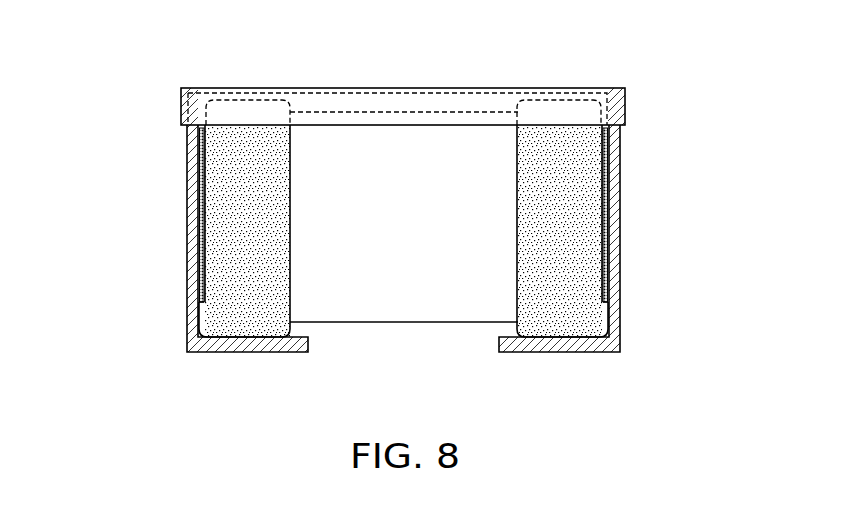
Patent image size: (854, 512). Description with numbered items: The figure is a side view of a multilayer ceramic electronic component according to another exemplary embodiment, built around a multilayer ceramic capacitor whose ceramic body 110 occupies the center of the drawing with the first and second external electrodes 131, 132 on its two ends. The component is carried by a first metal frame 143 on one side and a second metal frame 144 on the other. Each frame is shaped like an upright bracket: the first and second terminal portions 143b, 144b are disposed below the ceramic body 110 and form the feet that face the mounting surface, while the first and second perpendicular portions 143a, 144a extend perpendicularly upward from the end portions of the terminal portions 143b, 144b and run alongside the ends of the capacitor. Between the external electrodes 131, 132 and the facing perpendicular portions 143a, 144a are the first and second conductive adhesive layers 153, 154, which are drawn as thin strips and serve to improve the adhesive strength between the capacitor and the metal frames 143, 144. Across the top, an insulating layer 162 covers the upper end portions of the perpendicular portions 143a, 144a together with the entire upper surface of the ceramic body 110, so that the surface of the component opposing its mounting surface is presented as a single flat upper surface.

The ceramic body 110 is at (420, 310).
The first external electrode 131 is at (262, 333).
The second external electrode 132 is at (547, 333).
The first metal frame 143 is at (161, 235).
The first perpendicular portion 143a is at (203, 223).
The first terminal portion 143b is at (237, 345).
The second metal frame 144 is at (644, 235).
The second perpendicular portion 144a is at (605, 223).
The second terminal portion 144b is at (570, 345).
The first conductive adhesive layer 153 is at (202, 160).
The second conductive adhesive layer 154 is at (607, 160).
The insulating layer 162 is at (353, 92).